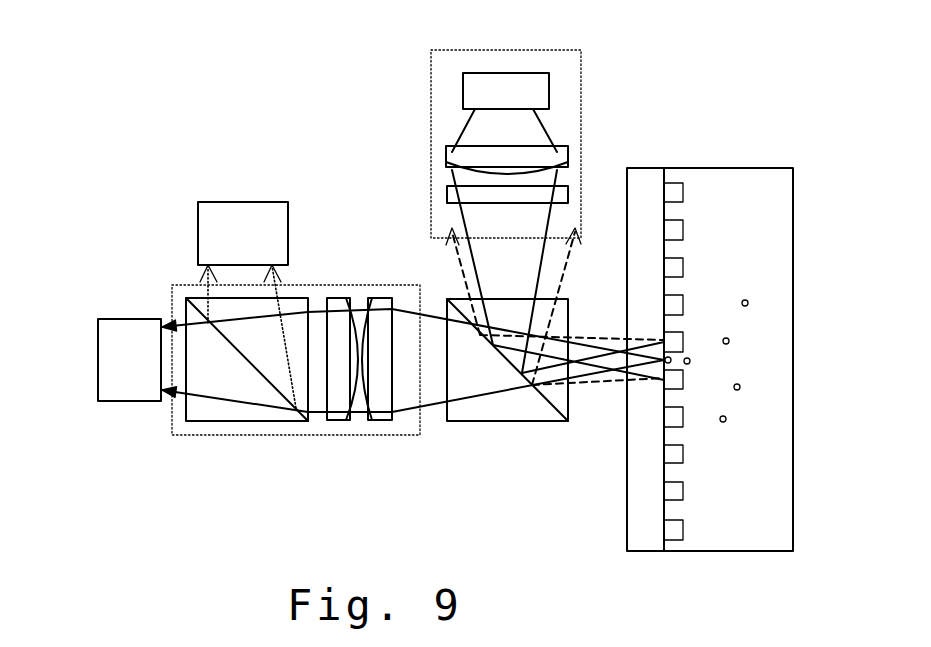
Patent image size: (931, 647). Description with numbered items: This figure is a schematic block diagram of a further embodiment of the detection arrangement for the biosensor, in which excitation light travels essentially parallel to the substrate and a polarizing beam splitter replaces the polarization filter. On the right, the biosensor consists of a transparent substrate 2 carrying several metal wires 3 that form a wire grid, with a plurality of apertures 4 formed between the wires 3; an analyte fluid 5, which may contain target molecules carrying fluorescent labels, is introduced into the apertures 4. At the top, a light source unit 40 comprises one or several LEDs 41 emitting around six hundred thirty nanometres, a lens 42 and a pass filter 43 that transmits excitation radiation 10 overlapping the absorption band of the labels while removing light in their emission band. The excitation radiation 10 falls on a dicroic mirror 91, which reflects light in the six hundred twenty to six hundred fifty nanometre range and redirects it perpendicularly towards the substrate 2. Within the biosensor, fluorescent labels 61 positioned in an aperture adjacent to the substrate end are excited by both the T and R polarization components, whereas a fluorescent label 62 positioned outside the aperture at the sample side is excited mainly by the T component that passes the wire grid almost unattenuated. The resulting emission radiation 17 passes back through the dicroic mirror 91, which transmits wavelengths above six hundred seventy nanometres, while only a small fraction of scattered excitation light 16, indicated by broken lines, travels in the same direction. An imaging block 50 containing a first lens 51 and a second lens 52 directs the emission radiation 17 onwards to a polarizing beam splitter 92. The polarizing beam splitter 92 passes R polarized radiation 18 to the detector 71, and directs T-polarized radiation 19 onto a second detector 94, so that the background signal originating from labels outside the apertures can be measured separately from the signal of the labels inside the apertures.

The transparent substrate 2 is at (648, 527).
The wires 3 is at (686, 493).
The apertures 4 is at (678, 510).
The analyte fluid 5 is at (770, 498).
The excitation radiation 10 is at (465, 215).
The scattered excitation light 16 is at (462, 268).
The emission radiation 17 is at (432, 407).
The R polarized radiation 18 is at (178, 397).
The T-polarized radiation 19 is at (207, 293).
The light source unit 40 is at (467, 73).
The LEDs 41 is at (465, 95).
The lens 42 is at (447, 154).
The pass filter 43 is at (447, 198).
The imaging block 50 is at (217, 437).
The first lens 51 is at (380, 420).
The second lens 52 is at (332, 420).
The fluorescent labels 61 is at (668, 356).
The fluorescent label 62 is at (689, 363).
The detector 71 is at (143, 402).
The dicroic mirror 91 is at (478, 422).
The polarizing beam splitter 92 is at (288, 422).
The second detector 94 is at (268, 202).